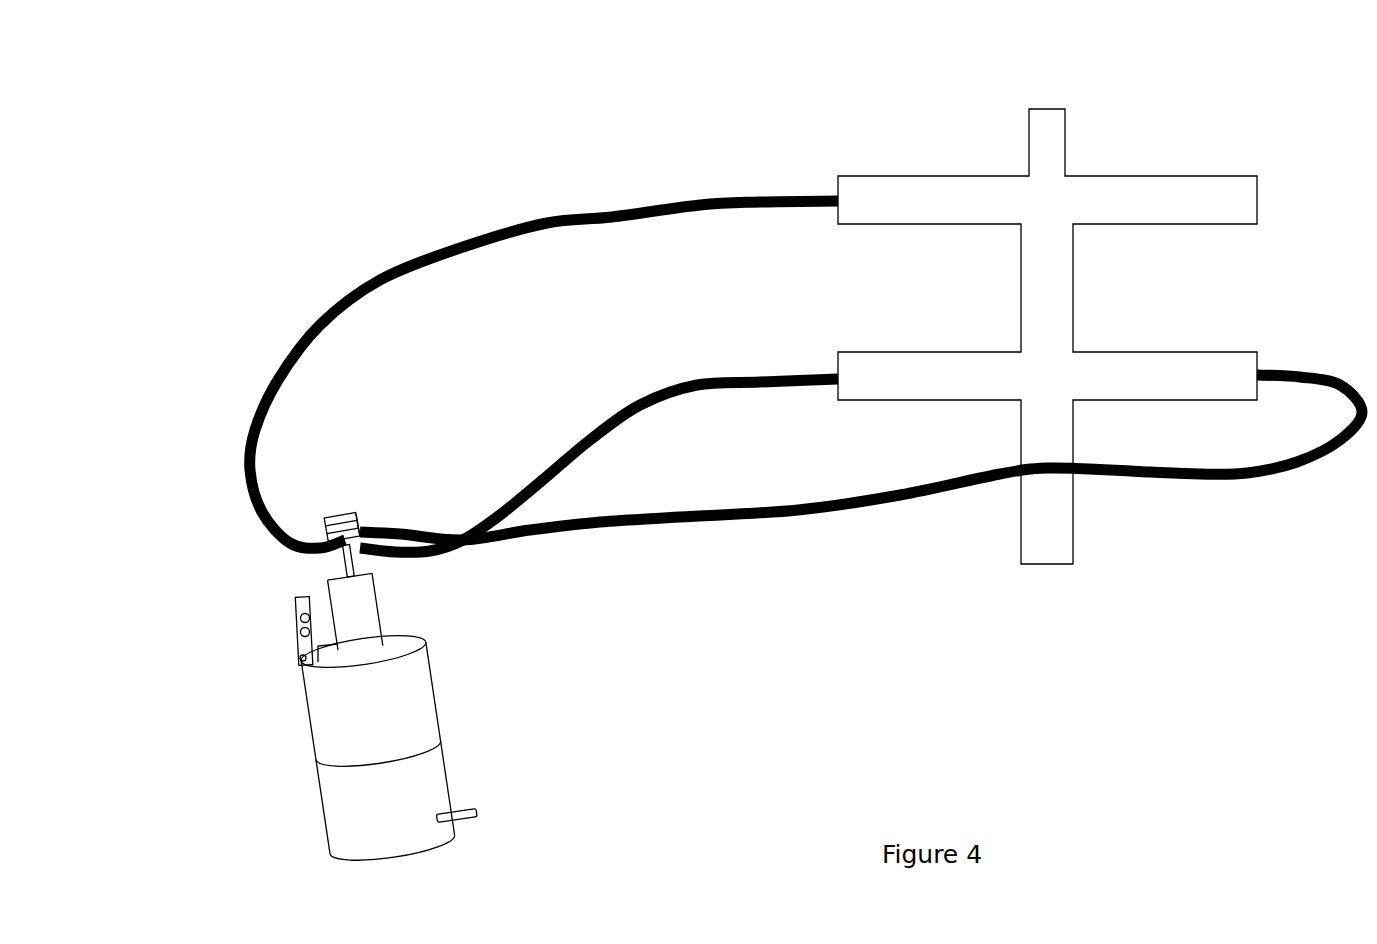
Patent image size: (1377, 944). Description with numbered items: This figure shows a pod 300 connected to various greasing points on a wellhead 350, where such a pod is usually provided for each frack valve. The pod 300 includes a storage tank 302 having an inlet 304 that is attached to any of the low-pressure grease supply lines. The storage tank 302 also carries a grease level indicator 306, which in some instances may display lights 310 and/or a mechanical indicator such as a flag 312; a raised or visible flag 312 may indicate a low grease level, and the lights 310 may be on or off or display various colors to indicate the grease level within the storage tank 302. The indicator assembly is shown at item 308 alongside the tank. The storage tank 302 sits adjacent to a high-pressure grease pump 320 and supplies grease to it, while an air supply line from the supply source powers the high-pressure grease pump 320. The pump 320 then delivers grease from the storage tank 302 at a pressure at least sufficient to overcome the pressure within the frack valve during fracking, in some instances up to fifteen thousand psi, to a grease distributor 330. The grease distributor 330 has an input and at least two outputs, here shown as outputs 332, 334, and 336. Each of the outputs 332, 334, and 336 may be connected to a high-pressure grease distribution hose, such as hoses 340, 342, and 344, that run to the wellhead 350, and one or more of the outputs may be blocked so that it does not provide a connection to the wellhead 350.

The pod 300 is at (620, 733).
The storage tank 302 is at (338, 802).
The inlet 304 is at (463, 817).
The grease level indicator 306 is at (302, 658).
The valve assembly 308 is at (297, 607).
The lights 310 is at (302, 633).
The flag 312 is at (300, 620).
The high-pressure grease pump 320 is at (353, 607).
The grease distributor 330 is at (340, 530).
The output 332 is at (312, 540).
The output 334 is at (327, 532).
The output 336 is at (367, 533).
The hose 340 is at (612, 212).
The hose 342 is at (697, 380).
The hose 344 is at (798, 502).
The wellhead 350 is at (1052, 125).